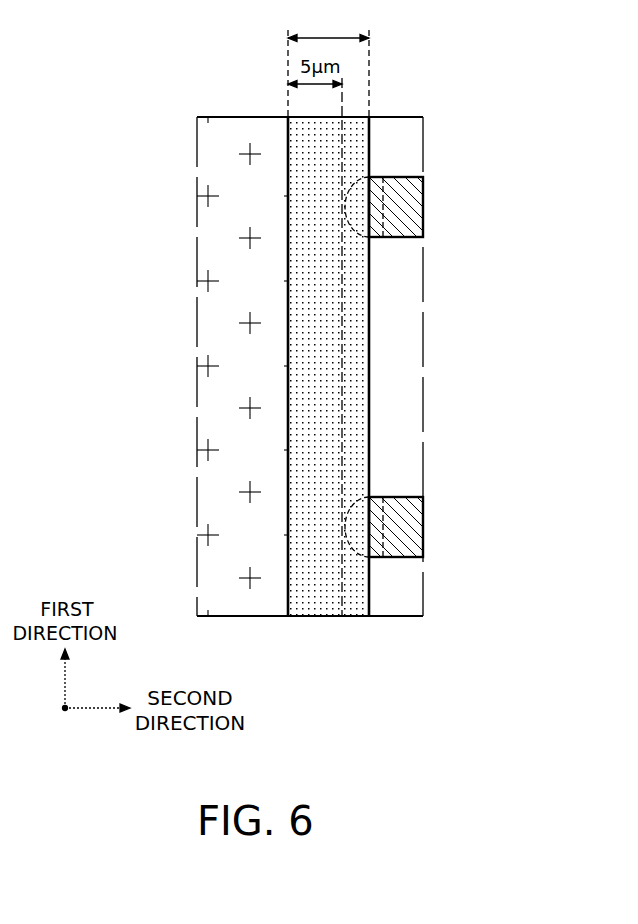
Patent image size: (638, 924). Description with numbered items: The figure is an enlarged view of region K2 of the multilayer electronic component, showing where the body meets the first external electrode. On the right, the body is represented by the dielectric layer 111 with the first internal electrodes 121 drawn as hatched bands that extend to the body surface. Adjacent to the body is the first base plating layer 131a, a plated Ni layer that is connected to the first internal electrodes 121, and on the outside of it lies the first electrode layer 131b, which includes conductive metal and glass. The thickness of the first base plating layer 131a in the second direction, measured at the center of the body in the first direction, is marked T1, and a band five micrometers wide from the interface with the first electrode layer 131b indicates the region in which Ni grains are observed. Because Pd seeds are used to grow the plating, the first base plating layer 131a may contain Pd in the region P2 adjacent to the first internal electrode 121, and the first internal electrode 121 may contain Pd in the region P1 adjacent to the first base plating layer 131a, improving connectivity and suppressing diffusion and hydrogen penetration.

The first electrode layer 131b is at (242, 125).
The first base plating layer 131a is at (362, 145).
The first internal electrode 121 is at (408, 532).
The dielectric layer 111 is at (408, 590).
The region P1 is at (376, 497).
The region P2 is at (354, 497).
The size of first base plating layer in second direction T1 is at (328, 64).
The region K2 is at (325, 738).